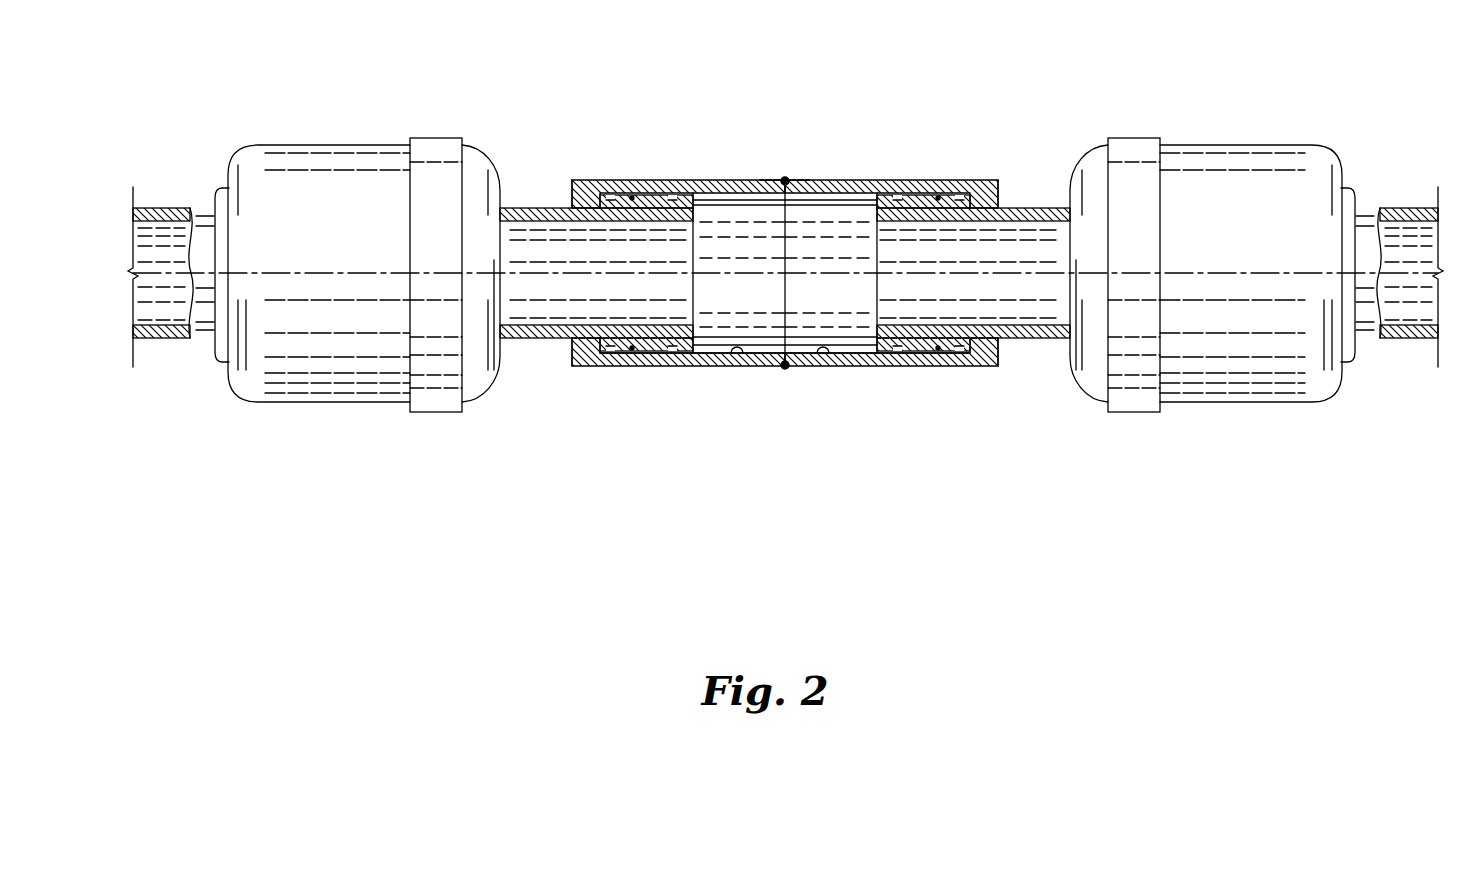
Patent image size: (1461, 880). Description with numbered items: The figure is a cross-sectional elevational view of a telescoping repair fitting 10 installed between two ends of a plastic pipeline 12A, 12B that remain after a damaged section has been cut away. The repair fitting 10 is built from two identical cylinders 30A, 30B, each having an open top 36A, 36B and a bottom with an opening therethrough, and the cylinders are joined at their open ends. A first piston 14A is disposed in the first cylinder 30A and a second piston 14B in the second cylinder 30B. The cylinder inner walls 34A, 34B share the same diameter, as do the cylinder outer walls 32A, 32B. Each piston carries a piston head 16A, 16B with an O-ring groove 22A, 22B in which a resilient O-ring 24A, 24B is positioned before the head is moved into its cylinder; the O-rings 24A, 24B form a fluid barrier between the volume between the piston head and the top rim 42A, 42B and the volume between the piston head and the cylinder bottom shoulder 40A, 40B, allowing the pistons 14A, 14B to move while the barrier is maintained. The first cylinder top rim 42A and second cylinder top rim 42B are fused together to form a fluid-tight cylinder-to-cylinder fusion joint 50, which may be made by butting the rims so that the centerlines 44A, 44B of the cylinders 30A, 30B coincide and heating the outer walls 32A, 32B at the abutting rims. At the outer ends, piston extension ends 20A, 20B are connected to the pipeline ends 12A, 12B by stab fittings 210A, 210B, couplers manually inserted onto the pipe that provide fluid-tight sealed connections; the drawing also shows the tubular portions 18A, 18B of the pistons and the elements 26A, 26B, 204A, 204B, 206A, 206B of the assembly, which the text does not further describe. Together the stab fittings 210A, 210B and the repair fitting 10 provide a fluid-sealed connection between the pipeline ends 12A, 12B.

The telescoping repair fitting 10 is at (880, 165).
The pipeline end 12A is at (180, 340).
The pipeline end 12B is at (1405, 340).
The first piston 14A is at (569, 301).
The second piston 14B is at (1013, 296).
The piston head 16A is at (703, 202).
The piston head 16B is at (870, 205).
The first tubular portion 18A is at (530, 340).
The second tubular portion 18B is at (1030, 340).
The piston extension end 20A is at (510, 208).
The piston extension end 20B is at (1055, 208).
The O-ring groove 22A is at (646, 244).
The O-ring groove 22B is at (944, 244).
The O-ring 24A is at (667, 352).
The O-ring 24B is at (902, 352).
The first seal ring 26A is at (610, 196).
The second seal ring 26B is at (967, 196).
The first cylinder 30A is at (663, 293).
The second cylinder 30B is at (915, 313).
The cylinder outer wall 32A is at (707, 368).
The cylinder outer wall 32B is at (857, 368).
The cylinder inner wall 34A is at (738, 354).
The cylinder inner wall 34B is at (823, 355).
The open top 36A is at (739, 273).
The open top 36B is at (831, 273).
The cylinder bottom shoulder 40A is at (575, 194).
The cylinder bottom shoulder 40B is at (1003, 198).
The first cylinder top rim 42A is at (777, 178).
The second cylinder top rim 42B is at (792, 178).
The centerline 44A is at (618, 276).
The centerline 44B is at (952, 276).
The fusion joint 50 is at (785, 367).
The first nut ring 204A is at (513, 357).
The second nut ring 204B is at (1058, 357).
The first flange 206A is at (215, 343).
The second flange 206B is at (1357, 345).
The stab fitting 210A is at (348, 261).
The stab fitting 210B is at (1239, 268).